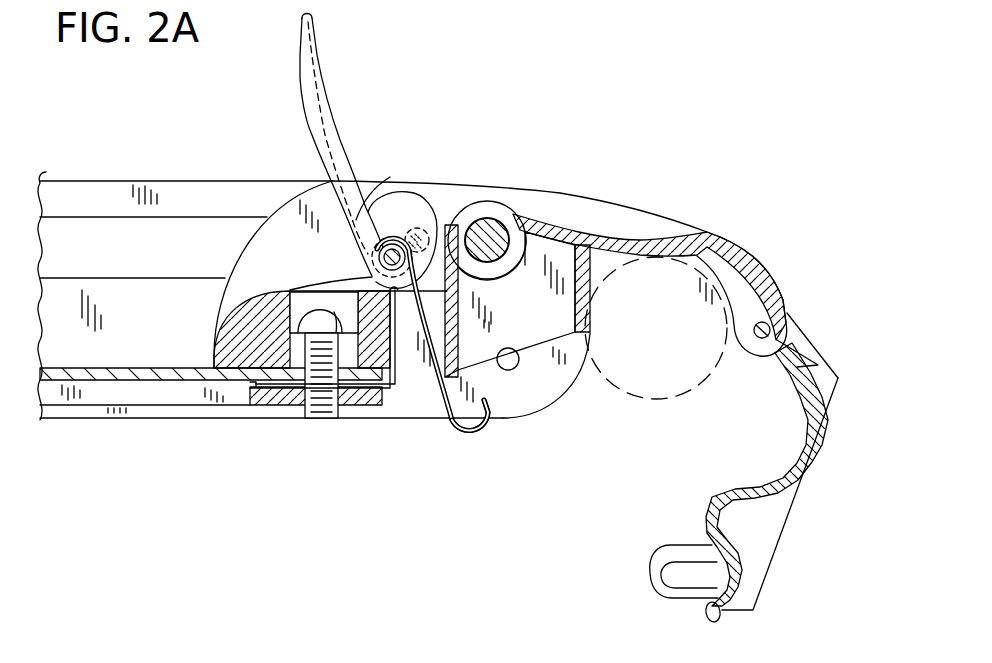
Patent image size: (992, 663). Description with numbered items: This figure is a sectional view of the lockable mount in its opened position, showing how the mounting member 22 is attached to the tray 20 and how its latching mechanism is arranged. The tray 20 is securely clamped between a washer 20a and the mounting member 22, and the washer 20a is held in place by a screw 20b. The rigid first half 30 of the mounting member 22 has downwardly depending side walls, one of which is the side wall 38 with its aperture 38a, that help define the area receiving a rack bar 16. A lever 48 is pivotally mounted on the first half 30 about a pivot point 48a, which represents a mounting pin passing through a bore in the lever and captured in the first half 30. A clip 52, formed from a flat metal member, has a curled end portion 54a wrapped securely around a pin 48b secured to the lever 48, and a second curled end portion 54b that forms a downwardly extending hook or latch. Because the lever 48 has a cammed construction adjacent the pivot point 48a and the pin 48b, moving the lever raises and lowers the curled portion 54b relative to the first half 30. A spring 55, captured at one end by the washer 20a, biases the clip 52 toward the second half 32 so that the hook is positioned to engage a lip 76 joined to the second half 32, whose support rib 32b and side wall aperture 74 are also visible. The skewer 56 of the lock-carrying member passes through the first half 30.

The bar 16 is at (653, 400).
The tray 20 is at (100, 193).
The washer 20a is at (285, 403).
The screw 20b is at (295, 293).
The mounting member 22 is at (790, 288).
The first half 30 is at (771, 266).
The second half 32 is at (828, 383).
The support rib 32b is at (788, 537).
The side wall 38 is at (548, 375).
The aperture 38a is at (516, 369).
The lever 48 is at (300, 107).
The pivot point 48a is at (417, 228).
The pin 48b is at (378, 262).
The clip 52 is at (465, 452).
The curled end portion 54a is at (363, 205).
The curled end portion 54b is at (483, 440).
The spring 55 is at (411, 365).
The skewer 56 is at (497, 218).
The aperture 74 is at (688, 580).
The lip 76 is at (718, 626).